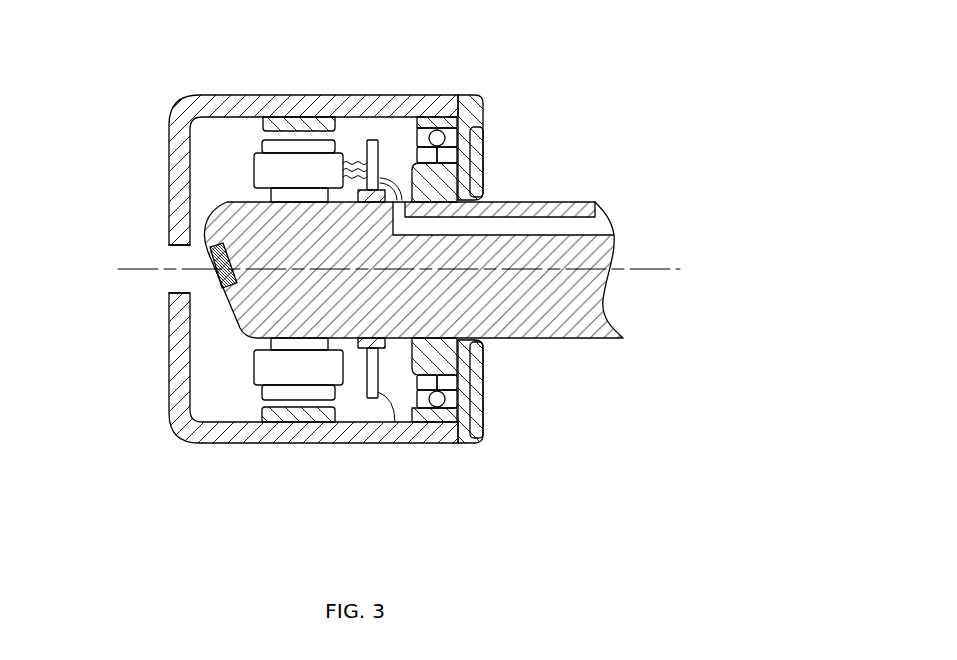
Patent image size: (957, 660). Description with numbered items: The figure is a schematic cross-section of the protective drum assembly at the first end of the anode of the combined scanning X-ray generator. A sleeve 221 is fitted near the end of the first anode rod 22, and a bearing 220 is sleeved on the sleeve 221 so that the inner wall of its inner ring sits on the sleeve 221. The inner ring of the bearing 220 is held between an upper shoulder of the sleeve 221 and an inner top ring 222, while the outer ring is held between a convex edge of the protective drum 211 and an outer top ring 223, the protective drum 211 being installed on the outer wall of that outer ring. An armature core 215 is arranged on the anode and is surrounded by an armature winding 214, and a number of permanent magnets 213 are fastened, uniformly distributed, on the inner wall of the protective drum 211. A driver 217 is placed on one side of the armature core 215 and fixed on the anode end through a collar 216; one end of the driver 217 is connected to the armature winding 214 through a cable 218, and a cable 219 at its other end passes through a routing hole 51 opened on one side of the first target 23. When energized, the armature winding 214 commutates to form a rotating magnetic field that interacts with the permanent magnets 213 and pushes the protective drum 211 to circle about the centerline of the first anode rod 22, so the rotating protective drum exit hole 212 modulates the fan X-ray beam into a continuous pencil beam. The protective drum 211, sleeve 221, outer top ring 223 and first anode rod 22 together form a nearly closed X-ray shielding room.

The protective drum 211 is at (180, 117).
The protective drum exit hole 212 is at (217, 448).
The permanent magnets 213 is at (273, 130).
The armature winding 214 is at (260, 370).
The armature core 215 is at (260, 396).
The collar 216 is at (355, 345).
The driver 217 is at (378, 392).
The cable 218 is at (363, 160).
The cable 219 is at (387, 185).
The bearing 220 is at (452, 425).
The sleeve 221 is at (414, 188).
The inner top ring 222 is at (475, 160).
The outer top ring 223 is at (480, 375).
The first anode rod 22 is at (585, 340).
The first target 23 is at (215, 278).
The routing hole 51 is at (527, 215).